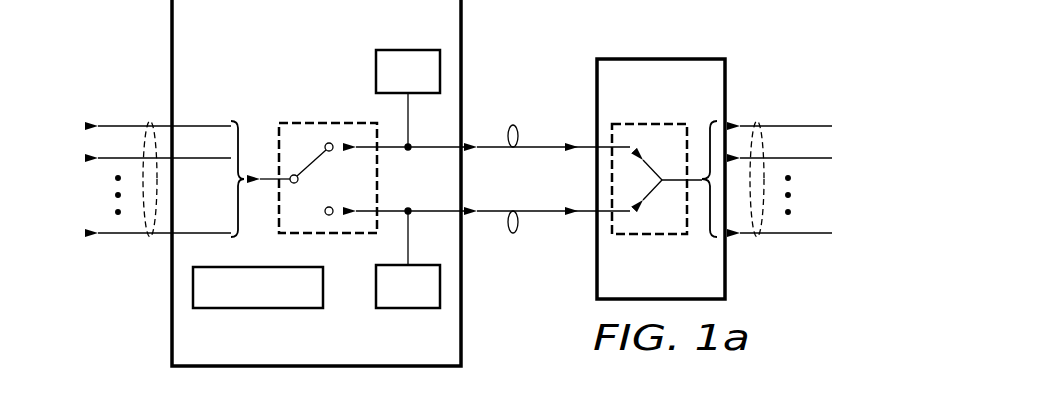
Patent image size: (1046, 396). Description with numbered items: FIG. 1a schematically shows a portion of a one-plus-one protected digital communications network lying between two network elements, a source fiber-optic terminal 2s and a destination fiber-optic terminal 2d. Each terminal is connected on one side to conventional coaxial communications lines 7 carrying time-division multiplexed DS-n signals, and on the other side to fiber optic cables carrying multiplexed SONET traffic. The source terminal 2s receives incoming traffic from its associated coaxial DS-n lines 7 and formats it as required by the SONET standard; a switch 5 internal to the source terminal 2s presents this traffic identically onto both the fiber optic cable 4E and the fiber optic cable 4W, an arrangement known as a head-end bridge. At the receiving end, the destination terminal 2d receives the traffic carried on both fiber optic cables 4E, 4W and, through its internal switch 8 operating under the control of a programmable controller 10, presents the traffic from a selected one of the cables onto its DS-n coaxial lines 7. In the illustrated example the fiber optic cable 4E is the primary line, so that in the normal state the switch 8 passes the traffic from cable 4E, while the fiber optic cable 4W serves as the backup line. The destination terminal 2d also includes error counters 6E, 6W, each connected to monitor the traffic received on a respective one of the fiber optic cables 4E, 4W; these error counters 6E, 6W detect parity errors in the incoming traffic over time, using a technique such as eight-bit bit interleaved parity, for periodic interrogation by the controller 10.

The destination network element (FOT) 2d is at (463, 37).
The source network element (FOT) 2s is at (660, 59).
The fiber optic cable (east) 4E is at (545, 147).
The fiber optic cable (west) 4W is at (546, 213).
The switch 5 is at (660, 124).
The error counter 6E is at (412, 50).
The error counter 6W is at (410, 308).
The coaxial communications lines 7 is at (150, 121).
The switch 8 is at (320, 122).
The programmable controller 10 is at (252, 310).